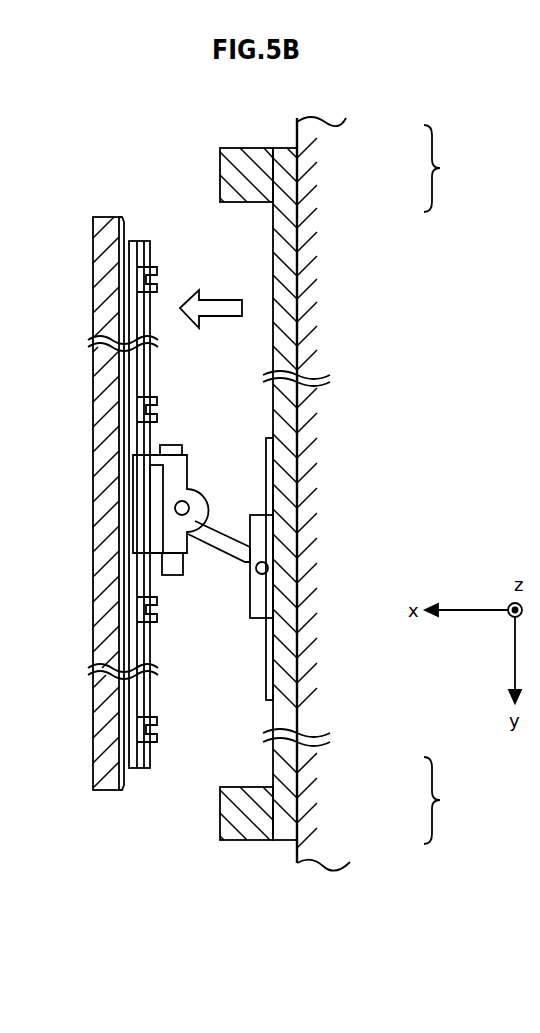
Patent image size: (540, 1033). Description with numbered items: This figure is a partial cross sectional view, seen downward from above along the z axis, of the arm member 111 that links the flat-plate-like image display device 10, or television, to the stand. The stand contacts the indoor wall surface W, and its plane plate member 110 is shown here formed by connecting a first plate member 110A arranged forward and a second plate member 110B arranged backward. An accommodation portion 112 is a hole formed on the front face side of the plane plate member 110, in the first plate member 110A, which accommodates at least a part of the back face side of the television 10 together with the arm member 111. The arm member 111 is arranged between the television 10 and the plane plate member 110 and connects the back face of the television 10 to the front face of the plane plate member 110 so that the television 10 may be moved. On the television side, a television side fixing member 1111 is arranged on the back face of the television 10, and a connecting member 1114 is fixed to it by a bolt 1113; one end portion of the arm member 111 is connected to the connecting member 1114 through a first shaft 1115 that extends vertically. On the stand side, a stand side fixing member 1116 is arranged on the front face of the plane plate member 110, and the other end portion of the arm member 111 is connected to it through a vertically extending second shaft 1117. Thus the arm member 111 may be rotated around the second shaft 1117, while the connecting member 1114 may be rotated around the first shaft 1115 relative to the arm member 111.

The indoor wall surface W is at (294, 138).
The image display device 10 is at (102, 432).
The plane plate member 110 is at (455, 484).
The first plate member 110A is at (272, 171).
The second plate member 110B is at (300, 198).
The arm member 111 is at (225, 532).
The accommodation portion 112 is at (242, 279).
The television side fixing member 1111 is at (157, 457).
The bolt 1113 is at (166, 447).
The connecting member 1114 is at (178, 480).
The first shaft 1115 is at (175, 508).
The stand side fixing member 1116 is at (252, 603).
The second shaft 1117 is at (268, 570).